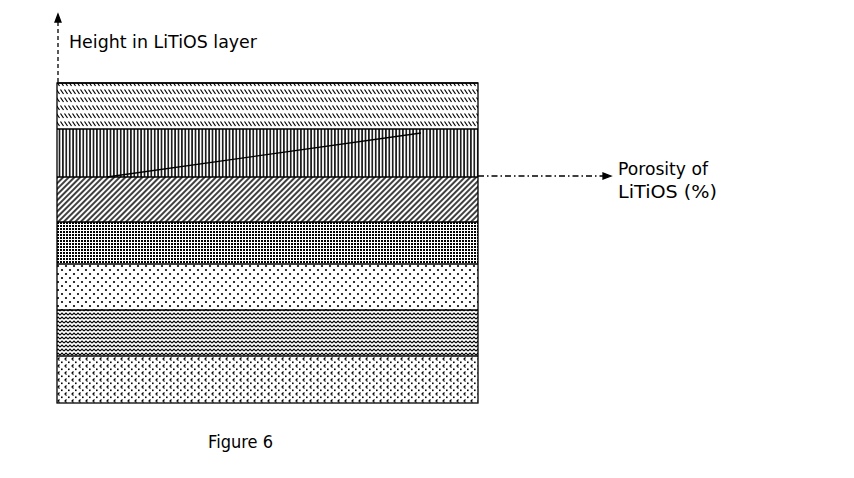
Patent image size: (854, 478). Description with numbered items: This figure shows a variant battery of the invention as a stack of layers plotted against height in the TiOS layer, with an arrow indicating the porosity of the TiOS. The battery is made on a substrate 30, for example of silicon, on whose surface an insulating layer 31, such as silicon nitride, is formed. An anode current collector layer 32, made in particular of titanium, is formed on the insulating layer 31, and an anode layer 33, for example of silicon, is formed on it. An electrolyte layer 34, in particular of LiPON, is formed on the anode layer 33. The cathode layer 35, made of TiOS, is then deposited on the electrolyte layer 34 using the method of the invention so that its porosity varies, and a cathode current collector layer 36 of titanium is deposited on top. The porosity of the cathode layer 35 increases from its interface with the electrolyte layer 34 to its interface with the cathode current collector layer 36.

The substrate 30 is at (458, 390).
The insulating layer 31 is at (455, 333).
The anode current collector layer 32 is at (455, 284).
The anode layer 33 is at (478, 240).
The electrolyte layer 34 is at (458, 198).
The cathode layer 35 is at (458, 149).
The cathode current collector layer 36 is at (458, 104).